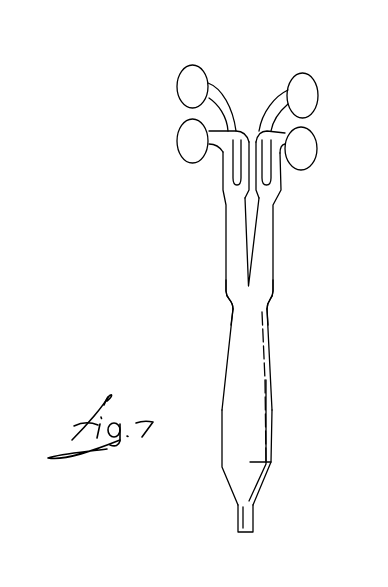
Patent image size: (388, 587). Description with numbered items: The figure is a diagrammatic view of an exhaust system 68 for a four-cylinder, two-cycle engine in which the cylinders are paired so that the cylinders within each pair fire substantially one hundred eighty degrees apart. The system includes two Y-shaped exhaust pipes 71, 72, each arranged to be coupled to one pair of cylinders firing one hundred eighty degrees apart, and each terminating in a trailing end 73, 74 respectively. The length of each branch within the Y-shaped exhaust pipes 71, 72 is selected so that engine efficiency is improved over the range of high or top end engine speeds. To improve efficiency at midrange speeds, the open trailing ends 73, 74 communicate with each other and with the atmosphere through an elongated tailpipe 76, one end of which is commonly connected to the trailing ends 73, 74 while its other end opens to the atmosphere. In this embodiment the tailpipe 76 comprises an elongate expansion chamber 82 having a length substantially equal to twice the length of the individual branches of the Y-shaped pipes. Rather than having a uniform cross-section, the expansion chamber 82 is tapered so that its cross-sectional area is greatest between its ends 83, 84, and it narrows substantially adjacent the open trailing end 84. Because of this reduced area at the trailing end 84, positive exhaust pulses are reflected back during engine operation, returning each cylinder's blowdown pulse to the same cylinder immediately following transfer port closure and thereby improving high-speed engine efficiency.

The exhaust system 68 is at (270, 310).
The Y-shaped exhaust pipe 71 is at (232, 223).
The Y-shaped exhaust pipe 72 is at (260, 232).
The trailing end 73 is at (225, 282).
The trailing end 74 is at (270, 284).
The tailpipe 76 is at (275, 358).
The expansion chamber 82 is at (227, 407).
The end of expansion chamber 83 is at (232, 307).
The open trailing end 84 is at (252, 515).